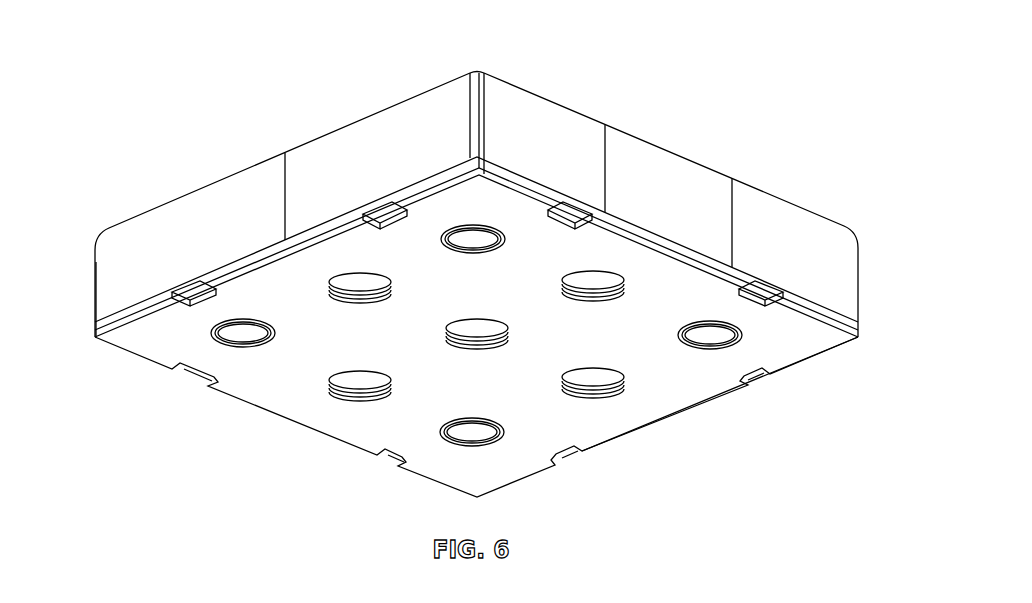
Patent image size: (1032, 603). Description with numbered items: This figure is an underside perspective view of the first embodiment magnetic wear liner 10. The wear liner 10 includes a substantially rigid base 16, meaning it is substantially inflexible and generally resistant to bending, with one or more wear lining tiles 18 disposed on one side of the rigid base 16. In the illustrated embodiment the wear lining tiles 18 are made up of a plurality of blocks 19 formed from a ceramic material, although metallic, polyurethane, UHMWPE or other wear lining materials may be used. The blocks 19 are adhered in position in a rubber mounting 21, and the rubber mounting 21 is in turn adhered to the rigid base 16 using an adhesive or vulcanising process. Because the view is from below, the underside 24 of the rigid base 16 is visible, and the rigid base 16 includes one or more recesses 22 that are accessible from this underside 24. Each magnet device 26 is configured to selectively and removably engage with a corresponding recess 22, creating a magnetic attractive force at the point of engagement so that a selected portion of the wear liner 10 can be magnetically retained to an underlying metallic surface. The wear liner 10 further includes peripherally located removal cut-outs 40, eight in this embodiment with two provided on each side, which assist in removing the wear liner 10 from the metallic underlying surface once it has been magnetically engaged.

The wear liner 10 is at (130, 150).
The rigid base 16 is at (852, 318).
The wear lining tiles 18 is at (403, 103).
The blocks 19 is at (543, 100).
The rubber mounting 21 is at (320, 223).
The recesses 22 is at (503, 237).
The underside 24 is at (792, 338).
The magnet devices 26 is at (482, 247).
The removal cut-out 40 is at (378, 215).